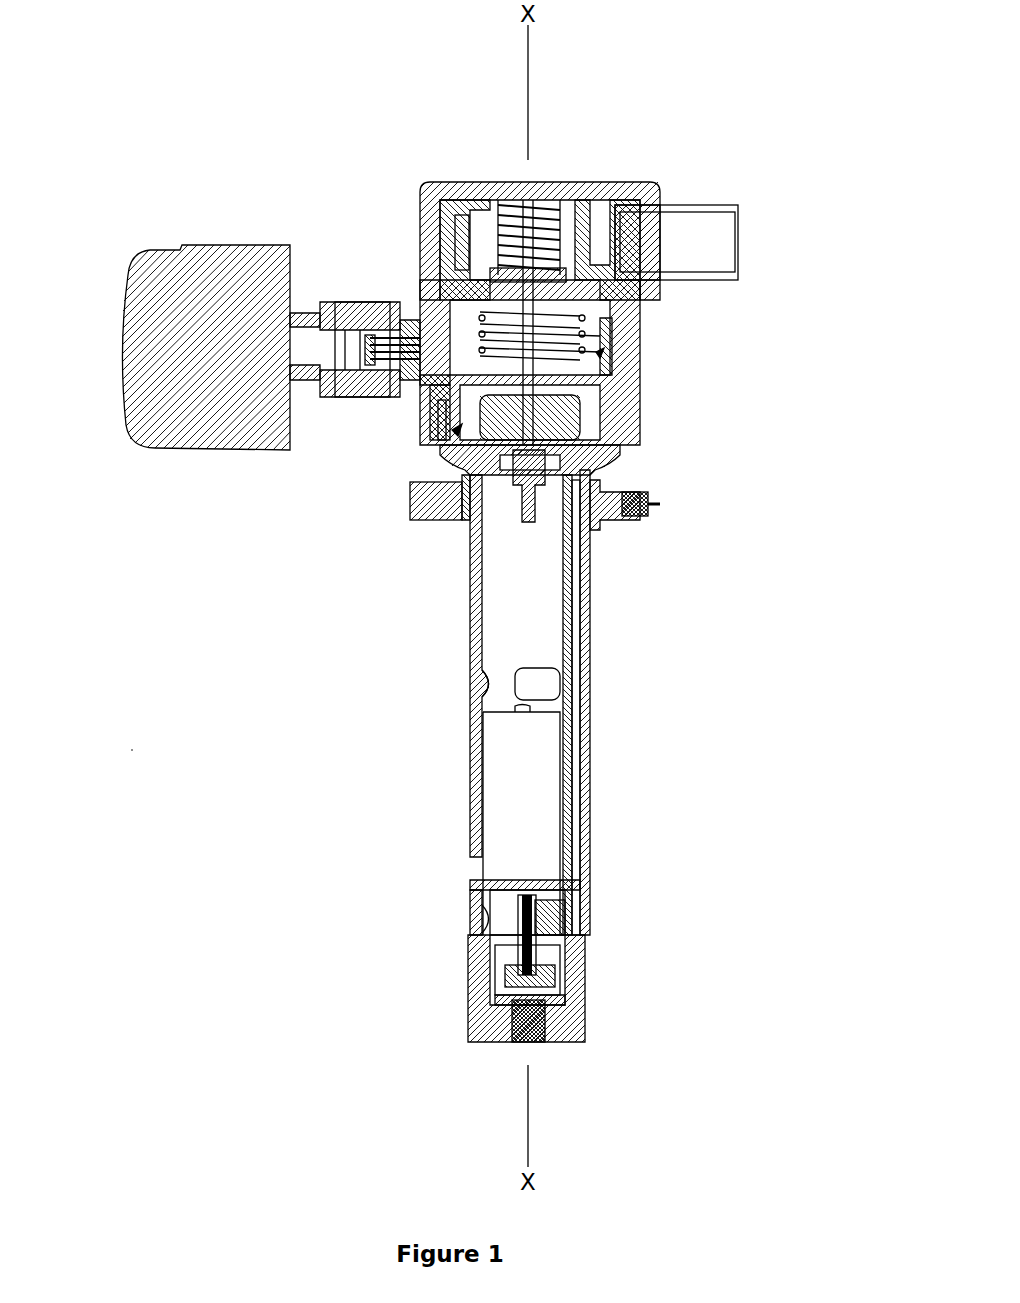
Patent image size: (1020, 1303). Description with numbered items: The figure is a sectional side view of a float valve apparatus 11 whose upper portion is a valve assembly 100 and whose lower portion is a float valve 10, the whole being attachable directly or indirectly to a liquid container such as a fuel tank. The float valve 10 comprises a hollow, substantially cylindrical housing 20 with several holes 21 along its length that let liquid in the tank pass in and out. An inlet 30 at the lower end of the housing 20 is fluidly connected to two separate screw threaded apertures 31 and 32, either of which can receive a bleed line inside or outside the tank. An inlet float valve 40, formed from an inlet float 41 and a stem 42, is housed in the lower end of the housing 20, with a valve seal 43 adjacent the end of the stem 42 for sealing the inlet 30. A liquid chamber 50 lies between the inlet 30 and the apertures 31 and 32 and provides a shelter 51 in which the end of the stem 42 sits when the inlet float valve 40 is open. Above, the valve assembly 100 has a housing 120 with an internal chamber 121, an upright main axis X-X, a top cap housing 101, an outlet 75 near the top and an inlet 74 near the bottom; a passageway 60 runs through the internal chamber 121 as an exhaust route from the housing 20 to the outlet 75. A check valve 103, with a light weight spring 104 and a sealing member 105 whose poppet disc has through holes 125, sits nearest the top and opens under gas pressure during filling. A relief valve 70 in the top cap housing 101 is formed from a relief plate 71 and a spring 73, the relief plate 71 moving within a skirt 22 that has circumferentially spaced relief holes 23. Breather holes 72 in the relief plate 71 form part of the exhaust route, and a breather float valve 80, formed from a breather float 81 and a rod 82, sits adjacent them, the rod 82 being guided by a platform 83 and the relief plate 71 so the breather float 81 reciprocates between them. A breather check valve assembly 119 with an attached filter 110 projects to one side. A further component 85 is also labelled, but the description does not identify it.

The float valve 10 is at (685, 605).
The float valve apparatus 11 is at (268, 615).
The housing 20 is at (458, 628).
The holes 21 is at (478, 682).
The skirt 22 is at (425, 272).
The relief holes 23 is at (425, 410).
The inlet 30 is at (580, 945).
The screw threaded aperture 31 is at (662, 505).
The screw threaded aperture 32 is at (520, 1042).
The inlet float valve 40 is at (570, 785).
The inlet float 41 is at (500, 790).
The stem 42 is at (570, 925).
The valve seal 43 is at (490, 975).
The liquid chamber 50 is at (580, 980).
The shelter 51 is at (585, 1000).
The passageway 60 is at (535, 595).
The relief valve 70 is at (605, 340).
The relief plate 71 is at (640, 400).
The breather holes 72 is at (430, 430).
The spring 73 is at (612, 318).
The inlet 74 is at (460, 432).
The outlet 75 is at (752, 235).
The breather float valve 80 is at (438, 455).
The breather float 81 is at (462, 510).
The rod 82 is at (522, 540).
The platform 83 is at (600, 458).
The retaining ring 85 is at (470, 886).
The valve assembly 100 is at (738, 152).
The top cap housing 101 is at (420, 182).
The check valve 103 is at (455, 243).
The light weight spring 104 is at (520, 183).
The sealing member 105 is at (590, 185).
The filter 110 is at (135, 250).
The breather check valve assembly 119 is at (352, 293).
The housing 120 is at (562, 165).
The internal chamber 121 is at (604, 350).
The through holes 125 is at (500, 275).